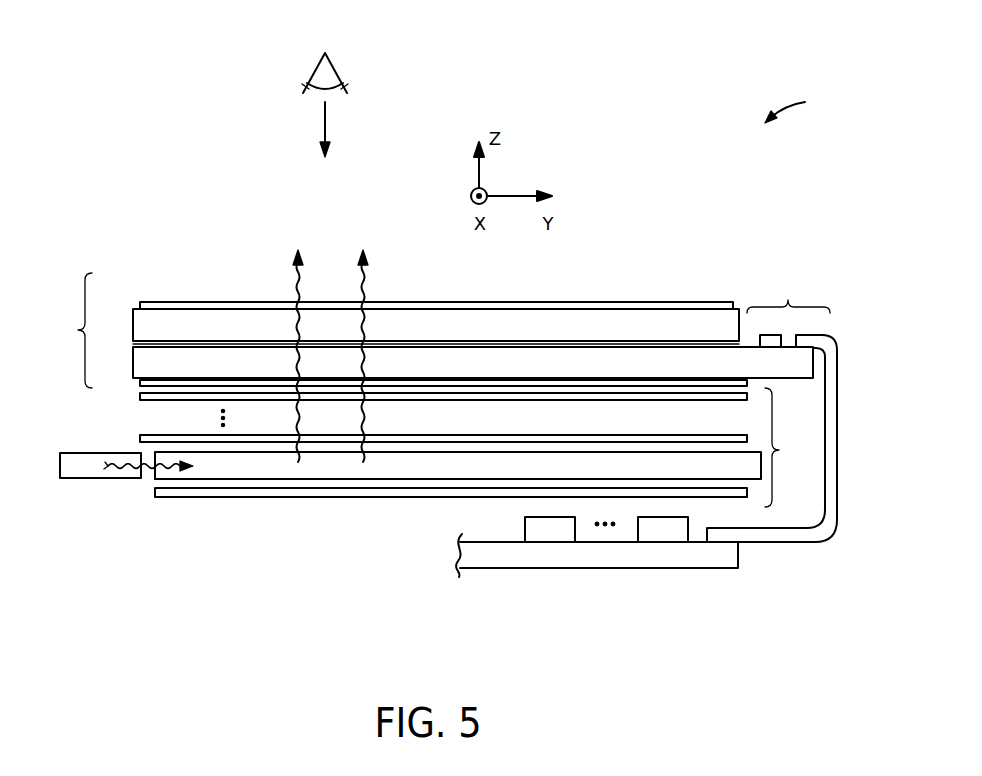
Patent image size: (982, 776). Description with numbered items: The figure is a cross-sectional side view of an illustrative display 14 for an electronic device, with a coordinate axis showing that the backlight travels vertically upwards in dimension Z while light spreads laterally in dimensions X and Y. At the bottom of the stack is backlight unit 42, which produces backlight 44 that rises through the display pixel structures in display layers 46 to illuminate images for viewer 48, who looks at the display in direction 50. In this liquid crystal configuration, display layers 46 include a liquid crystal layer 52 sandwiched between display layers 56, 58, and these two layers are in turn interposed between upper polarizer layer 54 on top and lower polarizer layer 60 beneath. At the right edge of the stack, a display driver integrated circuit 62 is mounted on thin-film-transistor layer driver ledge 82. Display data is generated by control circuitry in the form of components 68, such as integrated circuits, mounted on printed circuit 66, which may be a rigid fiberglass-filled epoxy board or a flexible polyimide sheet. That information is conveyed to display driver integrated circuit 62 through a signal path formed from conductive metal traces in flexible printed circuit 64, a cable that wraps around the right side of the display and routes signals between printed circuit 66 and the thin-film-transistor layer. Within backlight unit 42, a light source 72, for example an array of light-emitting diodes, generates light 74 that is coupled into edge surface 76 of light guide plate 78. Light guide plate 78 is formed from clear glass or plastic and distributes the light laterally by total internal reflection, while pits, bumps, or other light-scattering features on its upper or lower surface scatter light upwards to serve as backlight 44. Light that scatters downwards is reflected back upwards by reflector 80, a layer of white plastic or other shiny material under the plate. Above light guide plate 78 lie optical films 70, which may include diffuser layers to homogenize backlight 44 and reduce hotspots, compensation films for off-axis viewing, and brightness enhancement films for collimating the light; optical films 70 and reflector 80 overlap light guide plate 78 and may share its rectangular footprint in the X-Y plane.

The display 14 is at (799, 106).
The backlight unit 42 is at (788, 447).
The backlight 44 is at (299, 281).
The display layers 46 is at (68, 330).
The viewer 48 is at (338, 68).
The direction 50 is at (327, 122).
The liquid crystal layer 52 is at (190, 343).
The upper polarizer layer 54 is at (155, 302).
The display layer 56 is at (137, 322).
The display layer 58 is at (137, 368).
The lower polarizer layer 60 is at (140, 383).
The display driver integrated circuit 62 is at (770, 336).
The flexible printed circuit 64 is at (833, 392).
The printed circuit 66 is at (572, 560).
The components 68 is at (650, 522).
The optical films 70 is at (148, 434).
The light source 72 is at (65, 478).
The light 74 is at (115, 470).
The edge surface 76 is at (152, 473).
The light guide plate 78 is at (238, 473).
The reflector 80 is at (295, 495).
The thin-film-transistor layer driver ledge 82 is at (788, 292).